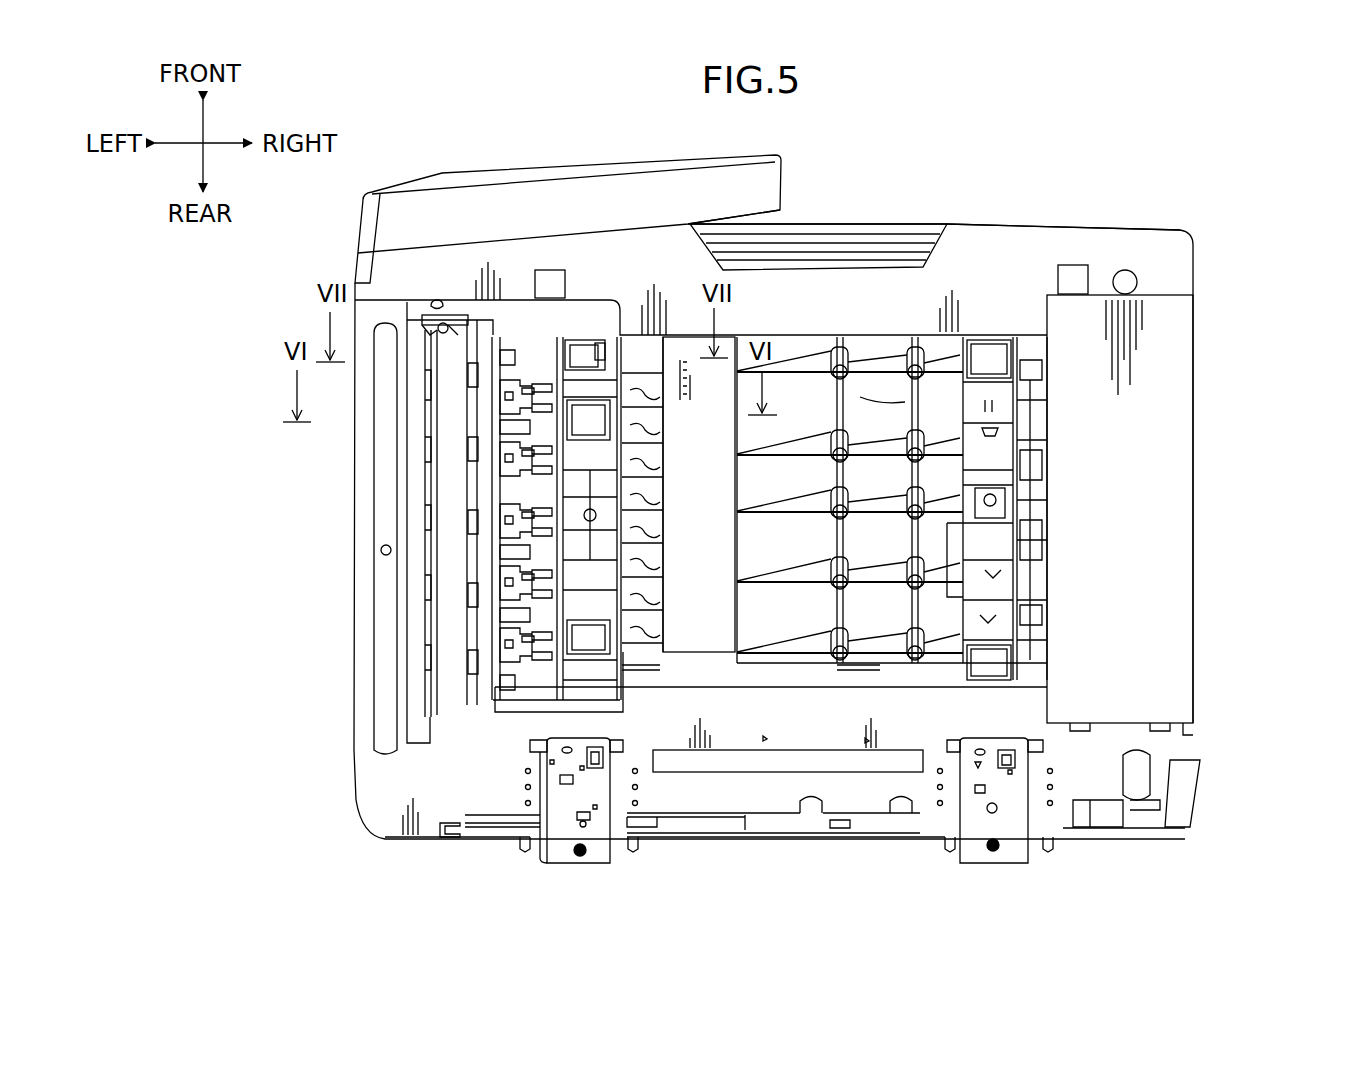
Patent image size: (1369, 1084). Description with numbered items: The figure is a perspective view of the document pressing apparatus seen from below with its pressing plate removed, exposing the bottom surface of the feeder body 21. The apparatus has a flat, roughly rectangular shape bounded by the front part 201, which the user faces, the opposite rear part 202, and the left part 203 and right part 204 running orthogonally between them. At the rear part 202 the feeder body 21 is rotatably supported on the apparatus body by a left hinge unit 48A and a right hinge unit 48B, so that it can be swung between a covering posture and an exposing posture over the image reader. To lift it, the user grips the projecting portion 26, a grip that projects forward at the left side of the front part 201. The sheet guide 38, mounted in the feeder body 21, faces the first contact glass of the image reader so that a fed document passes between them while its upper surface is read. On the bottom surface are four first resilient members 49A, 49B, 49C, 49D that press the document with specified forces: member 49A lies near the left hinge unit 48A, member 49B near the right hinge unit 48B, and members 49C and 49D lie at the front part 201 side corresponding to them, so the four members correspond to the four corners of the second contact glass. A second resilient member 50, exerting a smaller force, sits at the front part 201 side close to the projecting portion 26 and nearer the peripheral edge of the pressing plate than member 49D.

The feeder body 21 is at (1192, 185).
The projecting portion 26 is at (572, 197).
The sheet guide 38 is at (453, 348).
The second resilient member 50 is at (570, 359).
The left hinge unit 48A is at (578, 873).
The right hinge unit 48B is at (997, 875).
The first resilient member 49A is at (586, 641).
The first resilient member 49B is at (1020, 656).
The first resilient member 49C is at (997, 352).
The first resilient member 49D is at (580, 424).
The front part 201 is at (1000, 226).
The rear part 202 is at (770, 838).
The left part 203 is at (355, 660).
The right part 204 is at (1197, 567).